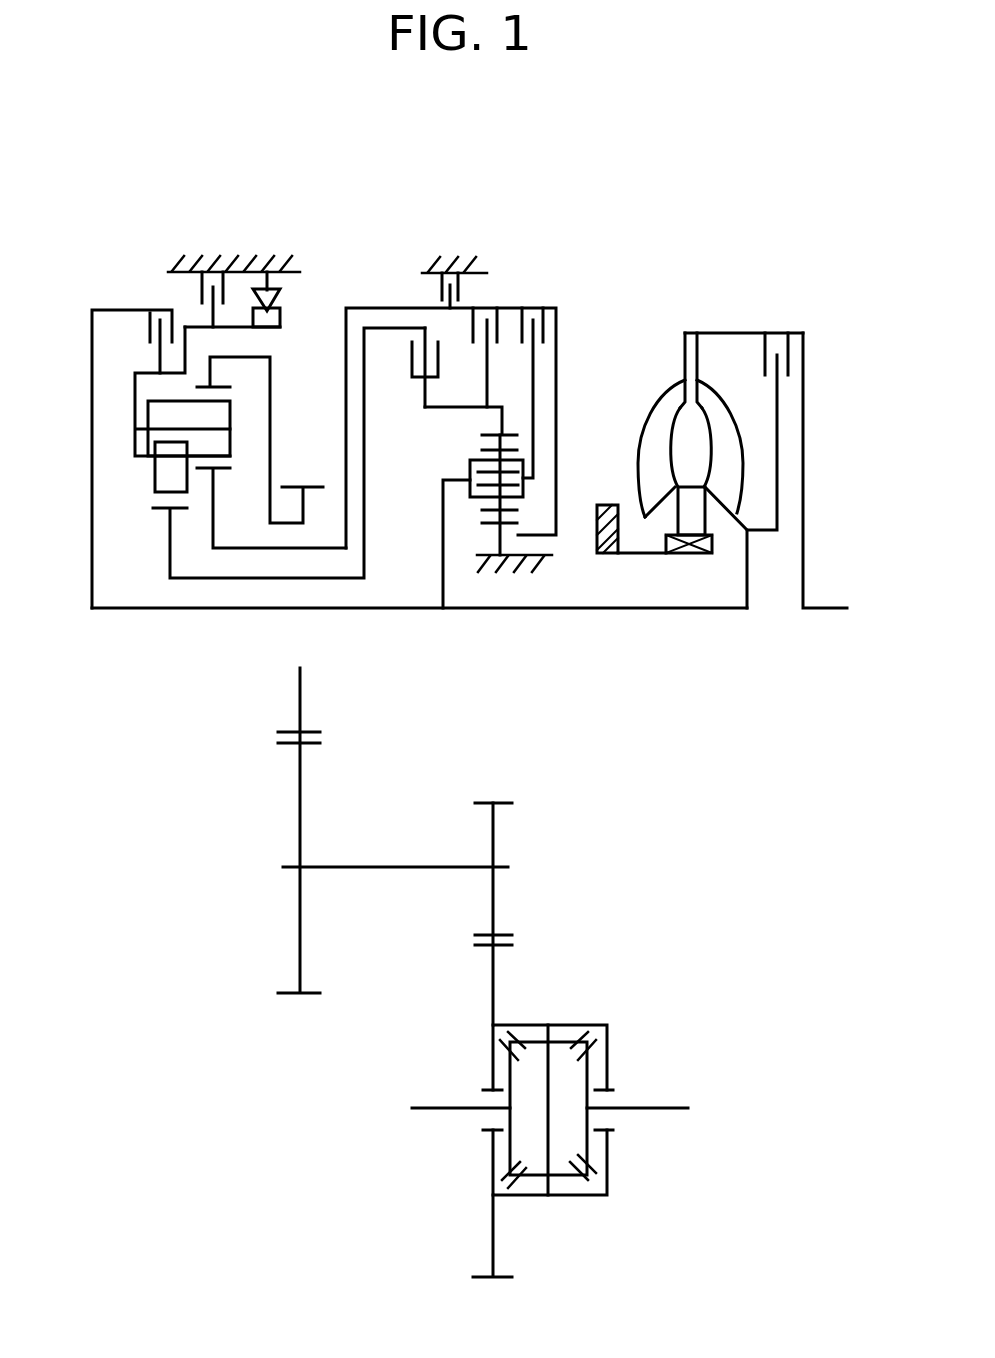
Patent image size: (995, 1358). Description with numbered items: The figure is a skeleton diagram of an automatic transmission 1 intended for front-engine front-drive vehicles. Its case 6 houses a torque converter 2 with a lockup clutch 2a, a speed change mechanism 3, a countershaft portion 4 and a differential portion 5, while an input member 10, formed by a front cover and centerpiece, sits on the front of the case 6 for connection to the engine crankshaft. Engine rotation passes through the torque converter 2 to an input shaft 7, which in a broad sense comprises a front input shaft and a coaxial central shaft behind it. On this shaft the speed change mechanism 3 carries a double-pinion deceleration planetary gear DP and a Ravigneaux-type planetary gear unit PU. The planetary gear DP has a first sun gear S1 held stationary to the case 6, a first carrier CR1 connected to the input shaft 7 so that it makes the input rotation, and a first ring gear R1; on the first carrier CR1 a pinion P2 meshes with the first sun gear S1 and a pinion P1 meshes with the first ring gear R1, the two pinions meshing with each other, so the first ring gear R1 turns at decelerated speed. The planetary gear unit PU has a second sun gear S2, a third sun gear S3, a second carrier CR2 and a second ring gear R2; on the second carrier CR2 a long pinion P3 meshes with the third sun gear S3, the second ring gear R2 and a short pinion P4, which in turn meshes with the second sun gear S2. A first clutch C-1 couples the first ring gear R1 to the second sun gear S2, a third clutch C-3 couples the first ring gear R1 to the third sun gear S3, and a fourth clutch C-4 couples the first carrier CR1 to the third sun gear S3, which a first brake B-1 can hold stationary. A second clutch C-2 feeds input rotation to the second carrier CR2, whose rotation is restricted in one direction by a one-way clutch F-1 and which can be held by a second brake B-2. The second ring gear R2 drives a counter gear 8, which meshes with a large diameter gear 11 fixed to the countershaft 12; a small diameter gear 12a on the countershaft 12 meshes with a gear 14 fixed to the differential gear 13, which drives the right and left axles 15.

The automatic transmission 1 is at (623, 235).
The torque converter 2 is at (697, 320).
The lockup clutch 2a is at (779, 365).
The speed change mechanism 3 is at (355, 258).
The countershaft portion 4 is at (549, 757).
The differential portion 5 is at (634, 1009).
The case 6 is at (175, 268).
The input shaft 7 is at (540, 610).
The counter gear 8 is at (306, 486).
The input member 10 is at (822, 605).
The large diameter gear 11 is at (300, 783).
The countershaft 12 is at (388, 868).
The small diameter gear 12a is at (495, 832).
The differential gear 13 is at (575, 1197).
The gear 14 is at (495, 978).
The axles 15 is at (435, 1113).
The planetary gear unit PU is at (92, 340).
The planetary gear DP is at (516, 426).
The first carrier CR1 is at (525, 488).
The second carrier CR2 is at (122, 404).
The first sun gear S1 is at (495, 524).
The second sun gear S2 is at (162, 508).
The third sun gear S3 is at (217, 472).
The first ring gear R1 is at (482, 434).
The second ring gear R2 is at (228, 383).
The pinion P1 is at (482, 450).
The pinion P2 is at (490, 509).
The long pinion P3 is at (232, 418).
The short pinion P4 is at (154, 477).
The first clutch C-1 is at (447, 367).
The second clutch C-2 is at (162, 329).
The third clutch C-3 is at (492, 343).
The fourth clutch C-4 is at (541, 379).
The first brake B-1 is at (453, 265).
The second brake B-2 is at (210, 277).
The one-way clutch F-1 is at (233, 277).